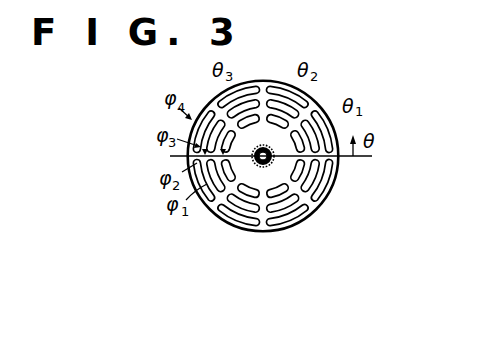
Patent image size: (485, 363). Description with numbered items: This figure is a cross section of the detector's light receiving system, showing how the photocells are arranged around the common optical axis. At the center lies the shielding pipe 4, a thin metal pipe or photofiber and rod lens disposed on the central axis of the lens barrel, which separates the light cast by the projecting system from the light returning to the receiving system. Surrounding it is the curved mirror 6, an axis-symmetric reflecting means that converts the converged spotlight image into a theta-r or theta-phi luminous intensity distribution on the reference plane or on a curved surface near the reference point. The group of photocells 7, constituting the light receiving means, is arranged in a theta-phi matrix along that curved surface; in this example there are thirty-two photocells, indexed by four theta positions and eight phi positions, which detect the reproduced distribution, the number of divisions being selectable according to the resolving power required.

The shielding pipe 4 is at (257, 149).
The curved mirror 6 is at (268, 161).
The group of photocells 7 is at (330, 194).